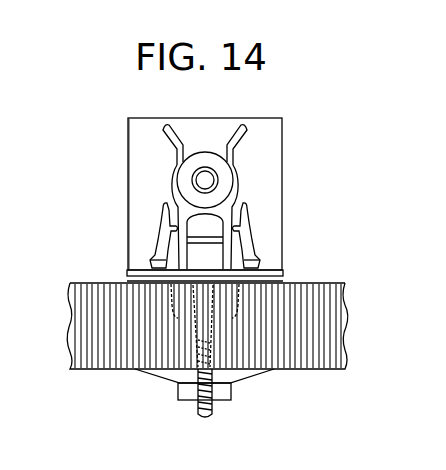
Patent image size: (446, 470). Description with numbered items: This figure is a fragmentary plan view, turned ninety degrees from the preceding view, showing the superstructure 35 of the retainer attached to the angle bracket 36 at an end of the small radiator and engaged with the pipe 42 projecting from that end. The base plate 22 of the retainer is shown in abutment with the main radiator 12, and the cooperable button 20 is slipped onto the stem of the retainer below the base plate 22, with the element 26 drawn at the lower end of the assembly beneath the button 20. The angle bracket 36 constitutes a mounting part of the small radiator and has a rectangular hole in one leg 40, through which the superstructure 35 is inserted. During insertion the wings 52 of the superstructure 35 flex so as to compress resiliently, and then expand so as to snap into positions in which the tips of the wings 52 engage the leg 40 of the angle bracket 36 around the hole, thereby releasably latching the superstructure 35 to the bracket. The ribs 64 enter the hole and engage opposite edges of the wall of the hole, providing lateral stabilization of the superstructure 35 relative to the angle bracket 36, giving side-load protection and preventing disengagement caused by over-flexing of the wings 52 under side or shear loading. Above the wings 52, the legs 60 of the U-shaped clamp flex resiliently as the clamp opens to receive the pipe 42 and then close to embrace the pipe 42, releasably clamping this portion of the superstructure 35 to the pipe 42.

The main radiator 12 is at (71, 327).
The button 20 is at (245, 382).
The base plate 22 is at (284, 283).
The screw 26 is at (208, 419).
The superstructure 35 is at (160, 188).
The angle bracket 36 is at (291, 123).
The leg 40 is at (127, 274).
The pipe 42 is at (205, 158).
The wings 52 is at (165, 243).
The legs 60 is at (170, 155).
The ribs 64 is at (158, 263).